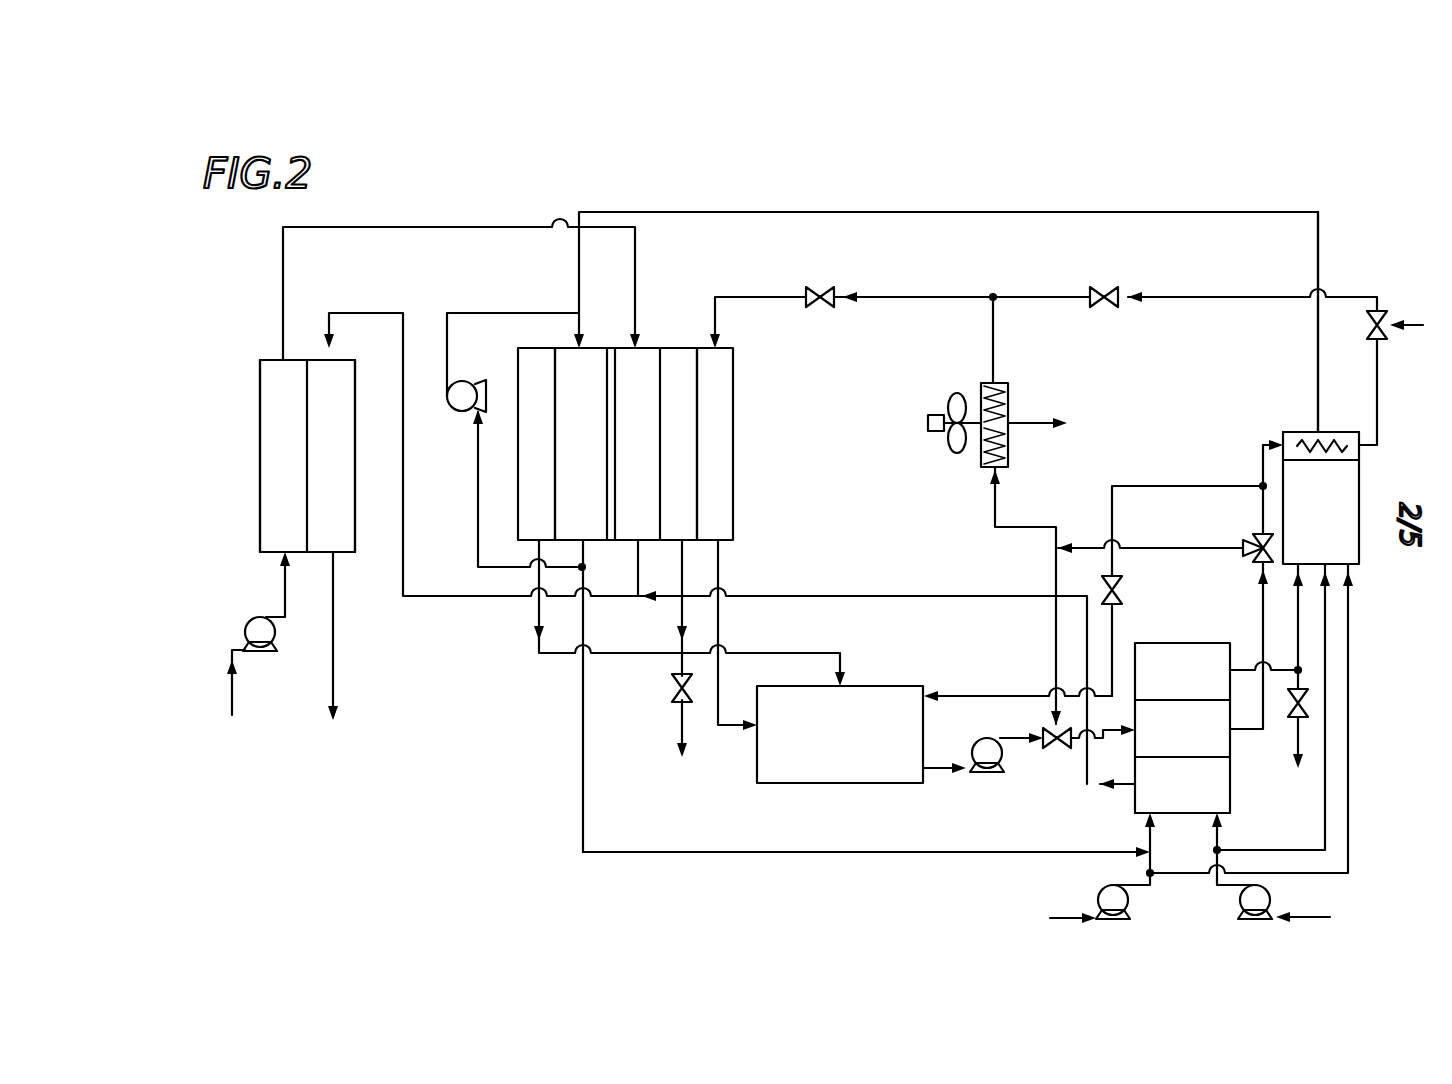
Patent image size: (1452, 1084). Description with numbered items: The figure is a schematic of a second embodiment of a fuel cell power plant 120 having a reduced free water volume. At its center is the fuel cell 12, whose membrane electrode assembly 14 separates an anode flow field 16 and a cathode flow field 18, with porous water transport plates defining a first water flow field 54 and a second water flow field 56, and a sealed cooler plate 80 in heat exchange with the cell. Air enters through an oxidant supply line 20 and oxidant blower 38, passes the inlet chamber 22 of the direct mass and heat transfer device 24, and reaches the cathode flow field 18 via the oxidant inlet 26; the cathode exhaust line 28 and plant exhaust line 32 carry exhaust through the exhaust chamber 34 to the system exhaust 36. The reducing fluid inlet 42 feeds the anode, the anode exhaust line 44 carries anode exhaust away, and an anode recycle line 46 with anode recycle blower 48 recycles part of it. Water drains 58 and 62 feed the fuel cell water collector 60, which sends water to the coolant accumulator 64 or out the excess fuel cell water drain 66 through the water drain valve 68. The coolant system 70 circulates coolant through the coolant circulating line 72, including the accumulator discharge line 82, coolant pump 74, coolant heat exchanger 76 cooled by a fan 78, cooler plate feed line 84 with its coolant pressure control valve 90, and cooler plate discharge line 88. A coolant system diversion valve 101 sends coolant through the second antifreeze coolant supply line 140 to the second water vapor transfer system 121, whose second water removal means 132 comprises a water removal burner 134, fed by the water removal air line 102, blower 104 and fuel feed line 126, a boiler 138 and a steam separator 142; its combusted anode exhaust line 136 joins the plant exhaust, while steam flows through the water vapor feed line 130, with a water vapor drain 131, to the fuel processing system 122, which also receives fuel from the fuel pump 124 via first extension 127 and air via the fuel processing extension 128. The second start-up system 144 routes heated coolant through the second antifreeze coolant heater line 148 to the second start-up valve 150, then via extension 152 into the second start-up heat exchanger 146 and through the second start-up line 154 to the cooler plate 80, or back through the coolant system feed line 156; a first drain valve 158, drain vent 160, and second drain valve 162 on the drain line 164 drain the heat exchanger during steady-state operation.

The fuel cell 12 is at (678, 318).
The membrane electrode assembly 14 is at (610, 355).
The anode flow field 16 is at (569, 412).
The cathode flow field 18 is at (624, 412).
The oxidant supply line 20 is at (233, 683).
The inlet chamber 22 is at (269, 476).
The direct mass and heat transfer device 24 is at (258, 390).
The oxidant inlet 26 is at (415, 230).
The cathode exhaust line 28 is at (637, 565).
The plant exhaust line 32 is at (408, 545).
The exhaust chamber 34 is at (317, 476).
The system exhaust 36 is at (334, 633).
The oxidant blower 38 is at (257, 625).
The reducing fluid inlet 42 is at (862, 212).
The anode exhaust line 44 is at (582, 757).
The anode recycle line 46 is at (477, 477).
The anode recycle blower 48 is at (463, 393).
The first water flow field 54 is at (524, 450).
The second water flow field 56 is at (667, 450).
The first fuel cell water drain 58 is at (538, 620).
The fuel cell water collector 60 is at (660, 652).
The second fuel cell water drain 62 is at (686, 560).
The coolant accumulator 64 is at (905, 686).
The excess fuel cell water drain 66 is at (683, 660).
The water drain valve 68 is at (670, 688).
The coolant system 70 is at (935, 572).
The coolant circulating line 72 is at (1053, 610).
The coolant pump 74 is at (972, 746).
The coolant heat exchanger 76 is at (1010, 392).
The fan 78 is at (928, 425).
The sealed cooler plate 80 is at (700, 412).
The accumulator discharge line 82 is at (940, 776).
The cooler plate feed line 84 is at (965, 300).
The cooler plate discharge line 88 is at (722, 620).
The coolant pressure control valve 90 is at (830, 307).
The coolant system diversion valve 101 is at (1052, 727).
The water removal air line 102 is at (1148, 890).
The water removal air blower 104 is at (1105, 900).
The fuel cell power plant 120 is at (1338, 197).
The second water vapor transfer system 121 is at (1168, 612).
The fuel processing system 122 is at (1358, 548).
The fuel pump 124 is at (1262, 887).
The fuel feed line 126 is at (1197, 880).
The first extension 127 is at (1328, 805).
The fuel processing extension 128 is at (1350, 850).
The water vapor feed line 130 is at (1283, 668).
The water vapor drain 131 is at (1312, 703).
The second water removal means 132 is at (1128, 823).
The water removal burner 134 is at (1232, 800).
The combusted anode exhaust line 136 is at (1118, 790).
The boiler 138 is at (1150, 745).
The second antifreeze coolant supply line 140 is at (1112, 694).
The steam separator 142 is at (1238, 648).
The second start-up system 144 is at (1350, 312).
The second start-up heat exchanger 146 is at (1303, 425).
The second antifreeze coolant heater line 148 is at (1267, 712).
The second start-up valve 150 is at (1258, 535).
The extension 152 is at (1258, 452).
The second start-up line 154 is at (1380, 368).
The coolant system feed line 156 is at (1150, 540).
The first drain valve 158 is at (1112, 306).
The drain vent 160 is at (1390, 316).
The second drain valve 162 is at (1105, 578).
The drain line 164 is at (1170, 483).